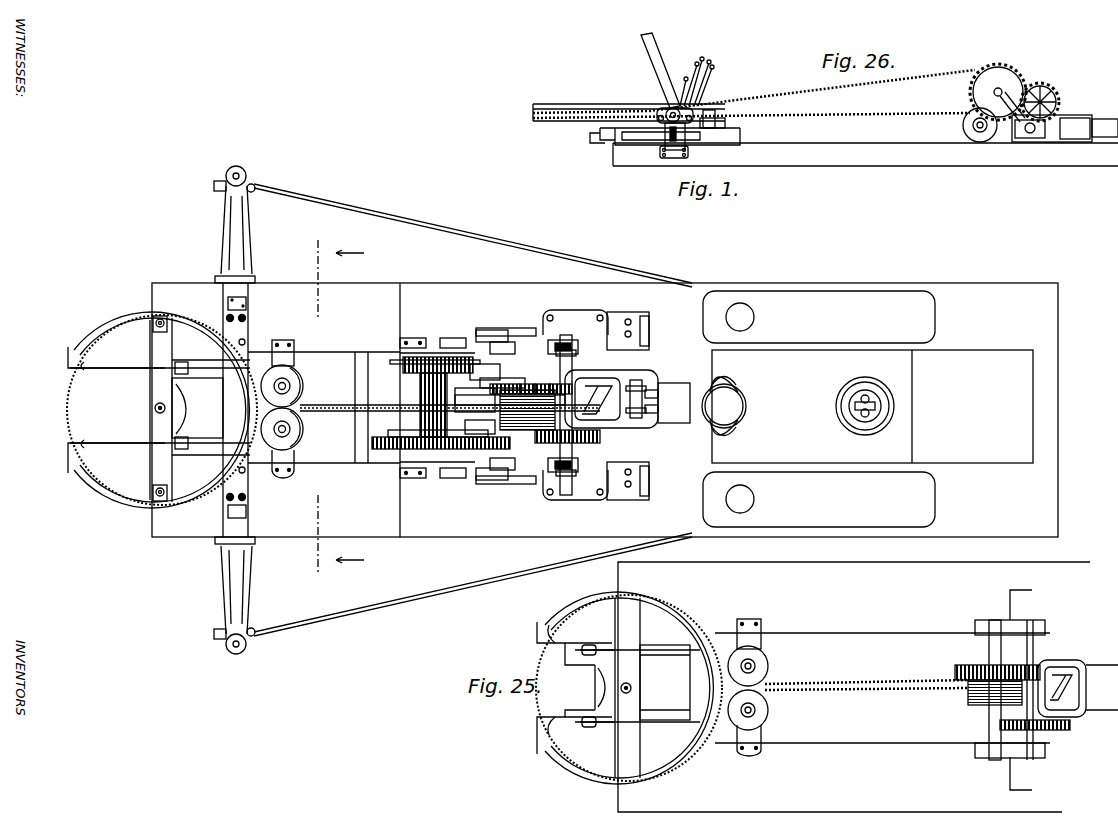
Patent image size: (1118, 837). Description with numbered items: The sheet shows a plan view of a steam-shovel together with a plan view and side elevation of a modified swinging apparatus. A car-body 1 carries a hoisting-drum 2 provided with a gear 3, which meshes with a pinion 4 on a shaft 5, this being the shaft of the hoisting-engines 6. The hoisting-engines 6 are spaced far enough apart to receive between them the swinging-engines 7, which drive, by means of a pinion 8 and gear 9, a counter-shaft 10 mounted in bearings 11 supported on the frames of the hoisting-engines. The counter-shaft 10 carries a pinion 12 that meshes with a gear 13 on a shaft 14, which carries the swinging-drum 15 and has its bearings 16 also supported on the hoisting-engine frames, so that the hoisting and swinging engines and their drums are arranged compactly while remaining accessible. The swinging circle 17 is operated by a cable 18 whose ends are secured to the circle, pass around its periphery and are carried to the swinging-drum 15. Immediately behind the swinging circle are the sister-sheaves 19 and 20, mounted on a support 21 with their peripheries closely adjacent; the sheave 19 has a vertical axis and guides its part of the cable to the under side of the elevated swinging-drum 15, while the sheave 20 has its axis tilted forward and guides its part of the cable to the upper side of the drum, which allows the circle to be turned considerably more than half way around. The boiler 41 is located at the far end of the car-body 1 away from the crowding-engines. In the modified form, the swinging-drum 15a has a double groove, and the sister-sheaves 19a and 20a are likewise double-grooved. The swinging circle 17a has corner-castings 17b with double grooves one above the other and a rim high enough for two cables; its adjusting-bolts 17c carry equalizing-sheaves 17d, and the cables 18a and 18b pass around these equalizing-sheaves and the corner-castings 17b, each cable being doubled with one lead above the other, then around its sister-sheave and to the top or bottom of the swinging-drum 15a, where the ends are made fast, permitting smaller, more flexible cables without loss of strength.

In FIG. 1, the car-body 1 is at (702, 280).
In FIG. 26, the car-body 1 is at (888, 183).
In FIG. 25, the car-body 1 is at (853, 545).
In FIG. 1, the hoisting-drum 2 is at (418, 384).
In FIG. 1, the gear 3 is at (385, 450).
In FIG. 1, the pinion 4 is at (492, 419).
In FIG. 1, the shaft 5 is at (514, 428).
In FIG. 1, the hoisting-engines 6 is at (582, 500).
In FIG. 1, the swinging-engines 7 is at (647, 388).
In FIG. 25, the swinging-engines 7 is at (1090, 672).
In FIG. 1, the pinion 8 is at (600, 437).
In FIG. 1, the gear 9 is at (567, 432).
In FIG. 1, the counter-shaft 10 is at (590, 401).
In FIG. 1, the bearings 11 is at (575, 485).
In FIG. 1, the pinion 12 is at (559, 381).
In FIG. 1, the gear 13 is at (505, 380).
In FIG. 1, the shaft 14 is at (532, 377).
In FIG. 1, the swinging-drum 15 is at (538, 382).
In FIG. 1, the bearings 16 is at (528, 475).
In FIG. 1, the swinging circle 17 is at (182, 335).
In FIG. 1, the cable 18 is at (348, 413).
In FIG. 1, the sister-sheave 19 is at (298, 438).
In FIG. 1, the sister-sheave 20 is at (291, 382).
In FIG. 1, the support 21 is at (294, 348).
In FIG. 1, the boiler 41 is at (834, 406).
In FIG. 26, the swinging-drum 15a is at (1005, 76).
In FIG. 25, the swinging-drum 15a is at (985, 706).
In FIG. 26, the swinging circle 17a is at (583, 102).
In FIG. 25, the swinging circle 17a is at (578, 612).
In FIG. 25, the corner-castings 17b is at (548, 723).
In FIG. 25, the adjusting-bolts 17c is at (598, 727).
In FIG. 25, the equalizing-sheaves 17d is at (578, 705).
In FIG. 26, the cable 18a is at (845, 110).
In FIG. 25, the cable 18a is at (655, 795).
In FIG. 26, the cable 18b is at (824, 125).
In FIG. 25, the cable 18b is at (925, 694).
In FIG. 26, the sister-sheave 19a is at (725, 125).
In FIG. 25, the sister-sheave 19a is at (768, 712).
In FIG. 26, the sister-sheave 20a is at (728, 102).
In FIG. 25, the sister-sheave 20a is at (768, 666).